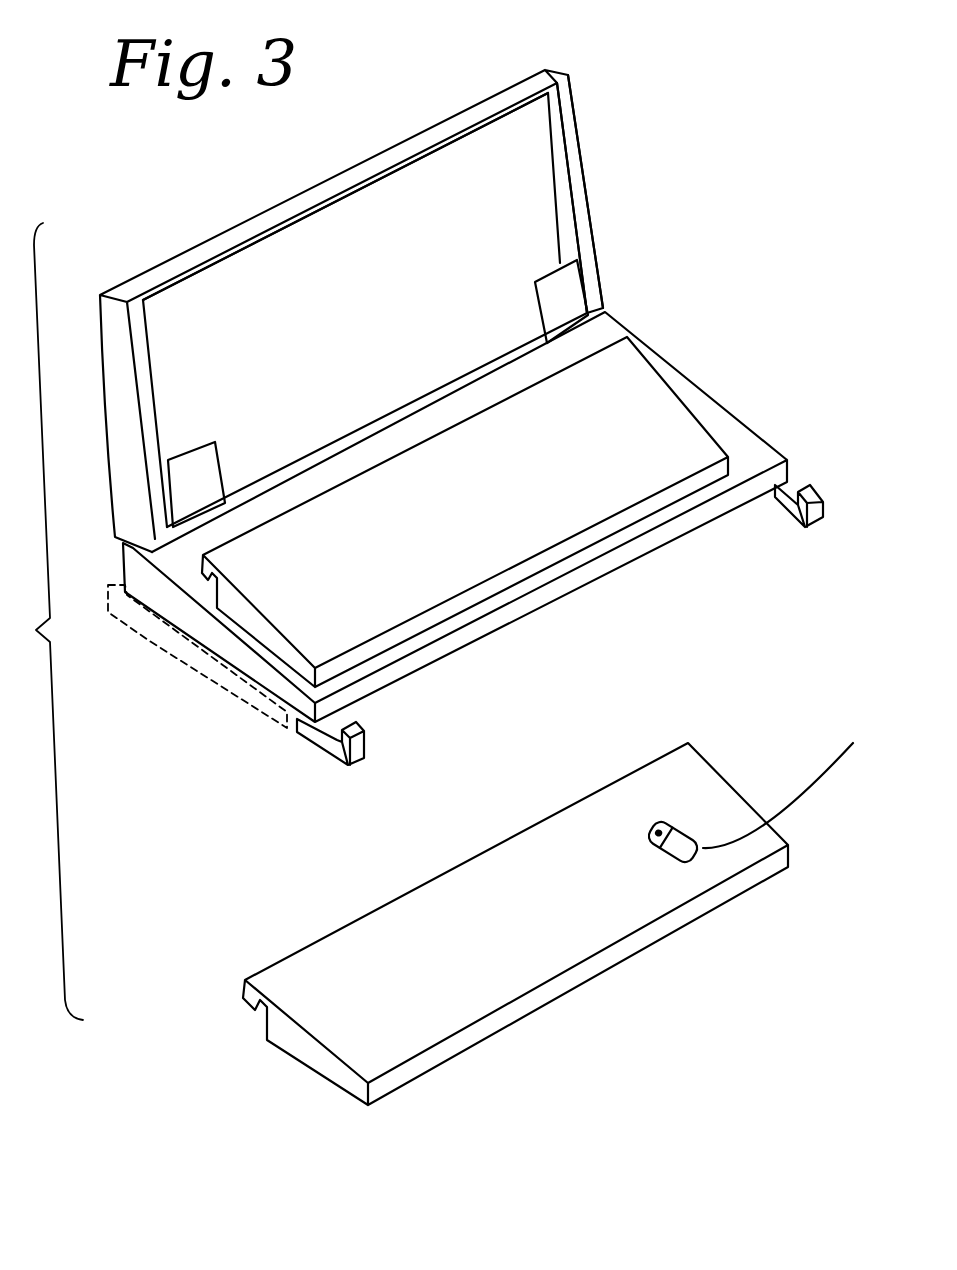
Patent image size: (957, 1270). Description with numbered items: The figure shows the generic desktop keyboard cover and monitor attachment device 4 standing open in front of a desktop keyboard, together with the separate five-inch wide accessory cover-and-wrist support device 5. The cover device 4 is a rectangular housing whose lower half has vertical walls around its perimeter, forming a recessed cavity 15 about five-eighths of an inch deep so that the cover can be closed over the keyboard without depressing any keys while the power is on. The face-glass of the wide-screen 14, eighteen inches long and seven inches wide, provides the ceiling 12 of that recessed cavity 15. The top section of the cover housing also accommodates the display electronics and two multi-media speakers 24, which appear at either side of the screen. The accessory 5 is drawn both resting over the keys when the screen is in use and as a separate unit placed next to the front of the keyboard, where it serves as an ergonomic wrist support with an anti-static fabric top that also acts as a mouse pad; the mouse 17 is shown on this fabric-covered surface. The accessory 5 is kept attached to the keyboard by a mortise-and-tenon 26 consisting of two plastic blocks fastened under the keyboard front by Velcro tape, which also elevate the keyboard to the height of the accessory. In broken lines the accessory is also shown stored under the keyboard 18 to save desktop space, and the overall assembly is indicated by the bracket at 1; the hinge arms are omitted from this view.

The base housing 1 is at (700, 398).
The Generic Desktop Keyboard Cover & Monitor Attachment device 4 is at (205, 240).
The accessory cover-and-wrist support device 5 is at (471, 538).
The ceiling of the recessed cavity 12 is at (208, 366).
The face-glass of the wide-screen 14 is at (501, 194).
The recessed cavity 15 is at (570, 128).
The mouse 17 is at (703, 833).
The accessory stored under the keyboard 18 is at (150, 645).
The multi-media speakers 24 is at (208, 496).
The mortise and tenon 26 is at (323, 752).